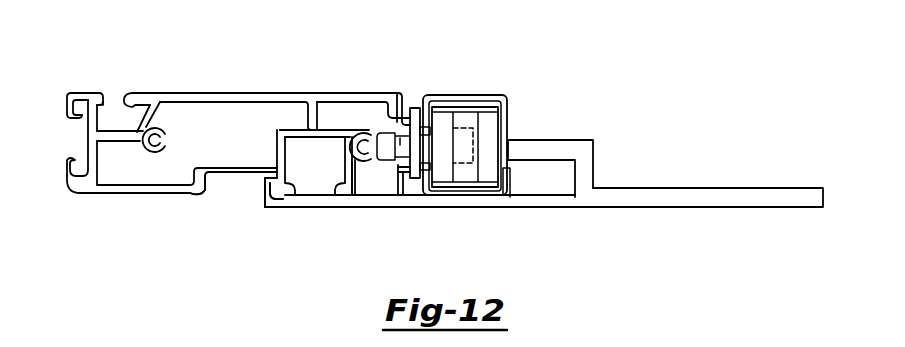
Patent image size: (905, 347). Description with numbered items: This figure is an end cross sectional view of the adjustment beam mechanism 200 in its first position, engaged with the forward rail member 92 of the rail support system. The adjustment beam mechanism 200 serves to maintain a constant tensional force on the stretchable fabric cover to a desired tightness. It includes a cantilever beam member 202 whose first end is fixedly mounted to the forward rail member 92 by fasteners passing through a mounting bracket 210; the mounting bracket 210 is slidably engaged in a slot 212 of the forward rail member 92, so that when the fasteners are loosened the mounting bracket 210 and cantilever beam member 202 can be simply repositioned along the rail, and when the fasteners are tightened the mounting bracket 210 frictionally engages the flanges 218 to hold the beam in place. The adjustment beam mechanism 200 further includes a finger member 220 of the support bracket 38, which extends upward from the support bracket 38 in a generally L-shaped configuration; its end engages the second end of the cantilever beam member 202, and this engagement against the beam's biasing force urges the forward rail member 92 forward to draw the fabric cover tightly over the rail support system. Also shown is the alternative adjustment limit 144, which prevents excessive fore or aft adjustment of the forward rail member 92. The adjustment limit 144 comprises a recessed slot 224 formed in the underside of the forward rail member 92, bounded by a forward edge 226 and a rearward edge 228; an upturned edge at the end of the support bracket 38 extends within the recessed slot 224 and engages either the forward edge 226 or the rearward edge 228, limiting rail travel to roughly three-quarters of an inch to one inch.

The forward rail member 92 is at (216, 93).
The mounting bracket 210 is at (400, 122).
The slot 212 is at (407, 170).
The cantilever beam member 202 is at (462, 108).
The flanges 218 is at (510, 98).
The adjustment beam mechanism 200 is at (612, 81).
The finger member 220 is at (549, 140).
The support bracket 38 is at (732, 187).
The recessed slot 224 is at (228, 172).
The forward edge 226 is at (195, 190).
The rearward edge 228 is at (270, 192).
The adjustment limit 144 is at (263, 216).